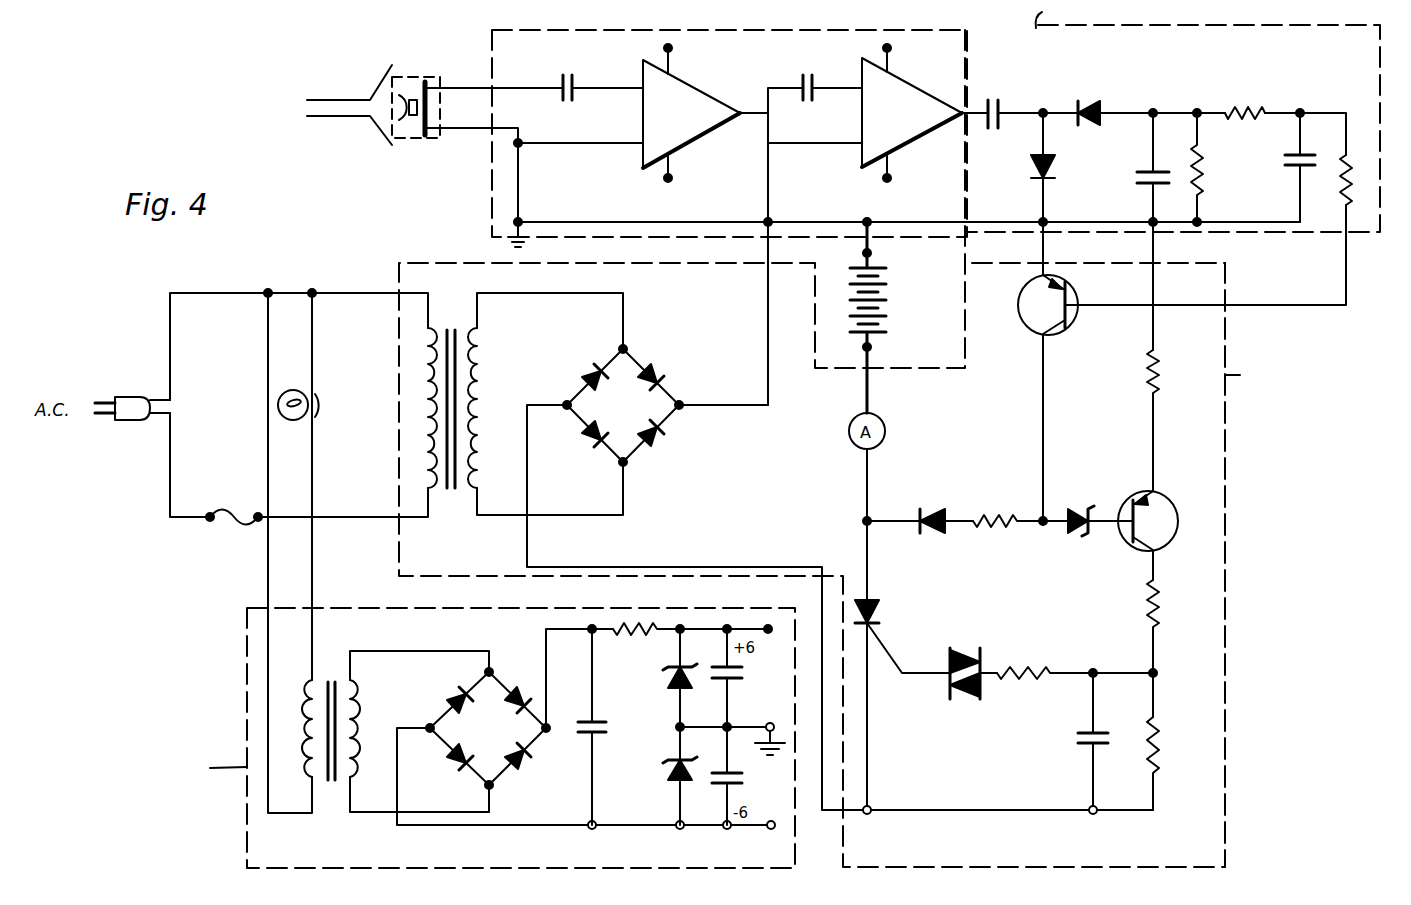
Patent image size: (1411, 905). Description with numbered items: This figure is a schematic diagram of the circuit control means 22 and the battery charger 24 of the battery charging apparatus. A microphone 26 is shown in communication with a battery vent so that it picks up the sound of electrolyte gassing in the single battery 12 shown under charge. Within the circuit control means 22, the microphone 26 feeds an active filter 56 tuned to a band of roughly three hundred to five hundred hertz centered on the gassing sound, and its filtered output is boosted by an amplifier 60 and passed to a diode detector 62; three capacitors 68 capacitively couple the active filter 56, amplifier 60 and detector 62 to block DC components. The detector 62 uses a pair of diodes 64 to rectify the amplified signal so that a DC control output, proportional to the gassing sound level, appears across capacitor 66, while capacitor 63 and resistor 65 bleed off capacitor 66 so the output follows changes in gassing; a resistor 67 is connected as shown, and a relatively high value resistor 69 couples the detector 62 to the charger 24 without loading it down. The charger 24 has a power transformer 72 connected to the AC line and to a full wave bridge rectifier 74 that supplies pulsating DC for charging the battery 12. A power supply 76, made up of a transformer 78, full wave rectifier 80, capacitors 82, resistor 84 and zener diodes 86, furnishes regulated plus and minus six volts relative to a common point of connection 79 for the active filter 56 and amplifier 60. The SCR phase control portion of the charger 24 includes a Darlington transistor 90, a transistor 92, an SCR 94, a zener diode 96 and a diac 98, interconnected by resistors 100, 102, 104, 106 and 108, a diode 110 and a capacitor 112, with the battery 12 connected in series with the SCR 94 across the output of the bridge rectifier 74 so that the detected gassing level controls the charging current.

The battery 12 is at (880, 291).
The circuit control means 22 is at (983, 28).
The battery charger 24 is at (1225, 446).
The microphone 26 is at (380, 134).
The active filter 56 is at (722, 116).
The amplifier 60 is at (933, 120).
The detector 62 is at (1320, 82).
The capacitor 63 is at (1140, 180).
The diodes 64 is at (1096, 124).
The resistor 65 is at (1206, 170).
The capacitor 66 is at (1290, 168).
The resistor 67 is at (1258, 121).
The capacitors 68 is at (568, 73).
The resistor 69 is at (1340, 195).
The power transformer 72 is at (462, 563).
The full wave bridge rectifier 74 is at (672, 481).
The power supply 76 is at (247, 662).
The transformer 78 is at (322, 825).
The common point of connection 79 is at (505, 240).
The full wave rectifier 80 is at (497, 740).
The capacitors 82 is at (608, 727).
The resistor 84 is at (636, 625).
The zener diodes 86 is at (666, 680).
The Darlington transistor 90 is at (1055, 325).
The transistor 92 is at (1163, 526).
The SCR 94 is at (878, 616).
The zener diode 96 is at (1079, 534).
The diac 98 is at (962, 660).
The resistor 100 is at (1146, 375).
The resistor 102 is at (1146, 601).
The resistor 104 is at (1160, 743).
The resistor 106 is at (1034, 686).
The resistor 108 is at (1001, 530).
The diode 110 is at (936, 507).
The capacitor 112 is at (1076, 742).